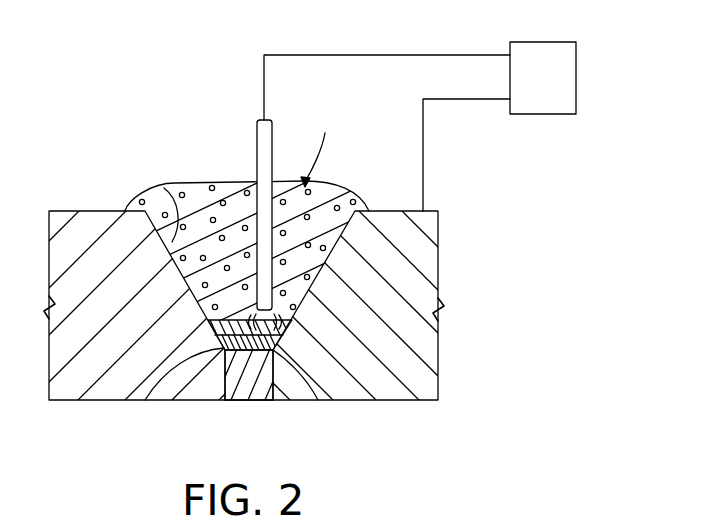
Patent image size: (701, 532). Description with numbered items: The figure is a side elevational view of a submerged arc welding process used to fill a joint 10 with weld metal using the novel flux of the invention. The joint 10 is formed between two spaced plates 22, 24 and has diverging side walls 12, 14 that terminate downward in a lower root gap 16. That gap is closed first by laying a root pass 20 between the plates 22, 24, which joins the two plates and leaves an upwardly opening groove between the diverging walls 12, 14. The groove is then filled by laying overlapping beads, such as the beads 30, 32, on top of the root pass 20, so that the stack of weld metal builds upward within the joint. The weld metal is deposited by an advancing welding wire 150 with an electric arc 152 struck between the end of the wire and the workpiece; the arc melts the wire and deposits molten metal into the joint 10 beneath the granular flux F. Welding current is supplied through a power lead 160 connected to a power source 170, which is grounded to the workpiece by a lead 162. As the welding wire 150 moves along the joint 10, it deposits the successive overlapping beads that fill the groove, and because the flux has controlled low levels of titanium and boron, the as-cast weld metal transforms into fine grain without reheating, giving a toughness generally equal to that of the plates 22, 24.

The joint 10 is at (180, 162).
The diverging side wall 12 is at (164, 188).
The diverging side wall 14 is at (337, 243).
The lower root gap 16 is at (233, 402).
The root pass 20 is at (257, 388).
The plate 22 is at (100, 388).
The plate 24 is at (388, 390).
The bead 30 is at (146, 400).
The bead 32 is at (318, 400).
The welding wire 150 is at (257, 142).
The electric arc 152 is at (280, 322).
The power lead 160 is at (384, 55).
The lead 162 is at (462, 99).
The power source 170 is at (576, 79).